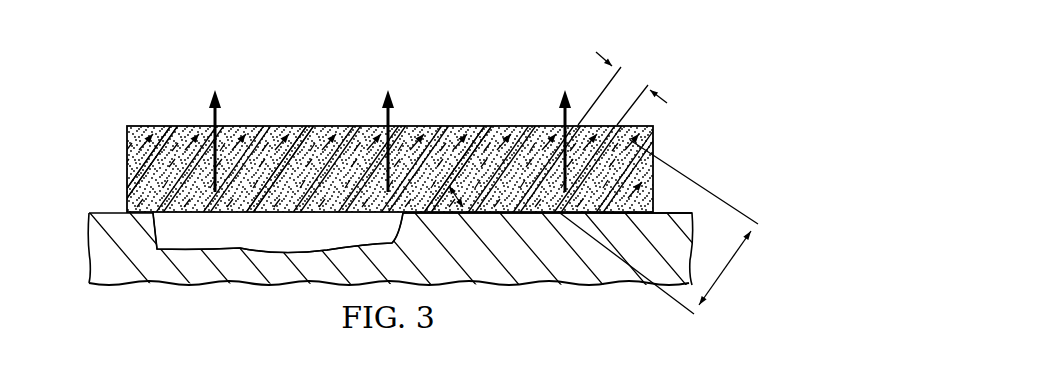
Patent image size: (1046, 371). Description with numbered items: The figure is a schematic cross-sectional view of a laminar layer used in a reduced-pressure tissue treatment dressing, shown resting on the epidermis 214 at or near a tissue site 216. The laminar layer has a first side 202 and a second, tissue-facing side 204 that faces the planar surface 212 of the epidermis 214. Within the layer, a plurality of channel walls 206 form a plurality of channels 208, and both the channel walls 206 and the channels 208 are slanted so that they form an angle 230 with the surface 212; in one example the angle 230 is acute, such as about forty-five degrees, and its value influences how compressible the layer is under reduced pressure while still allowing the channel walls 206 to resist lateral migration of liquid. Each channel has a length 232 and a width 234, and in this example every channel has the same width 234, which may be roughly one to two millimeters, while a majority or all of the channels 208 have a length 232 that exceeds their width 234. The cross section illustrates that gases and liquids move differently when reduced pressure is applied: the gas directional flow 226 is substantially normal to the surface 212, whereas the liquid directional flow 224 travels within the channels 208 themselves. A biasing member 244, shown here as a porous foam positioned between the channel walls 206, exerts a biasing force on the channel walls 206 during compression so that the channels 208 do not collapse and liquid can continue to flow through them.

The first side 202 is at (127, 127).
The second, tissue-facing side 204 is at (512, 212).
The channel walls 206 is at (338, 142).
The channels 208 is at (146, 132).
The surface 212 is at (677, 213).
The epidermis 214 is at (96, 242).
The tissue site 216 is at (245, 246).
The liquid directional flow 224 is at (325, 125).
The gas directional flow 226 is at (213, 114).
The angle 230 is at (458, 205).
The length 232 is at (727, 268).
The width 234 is at (667, 103).
The biasing member 244 is at (247, 133).